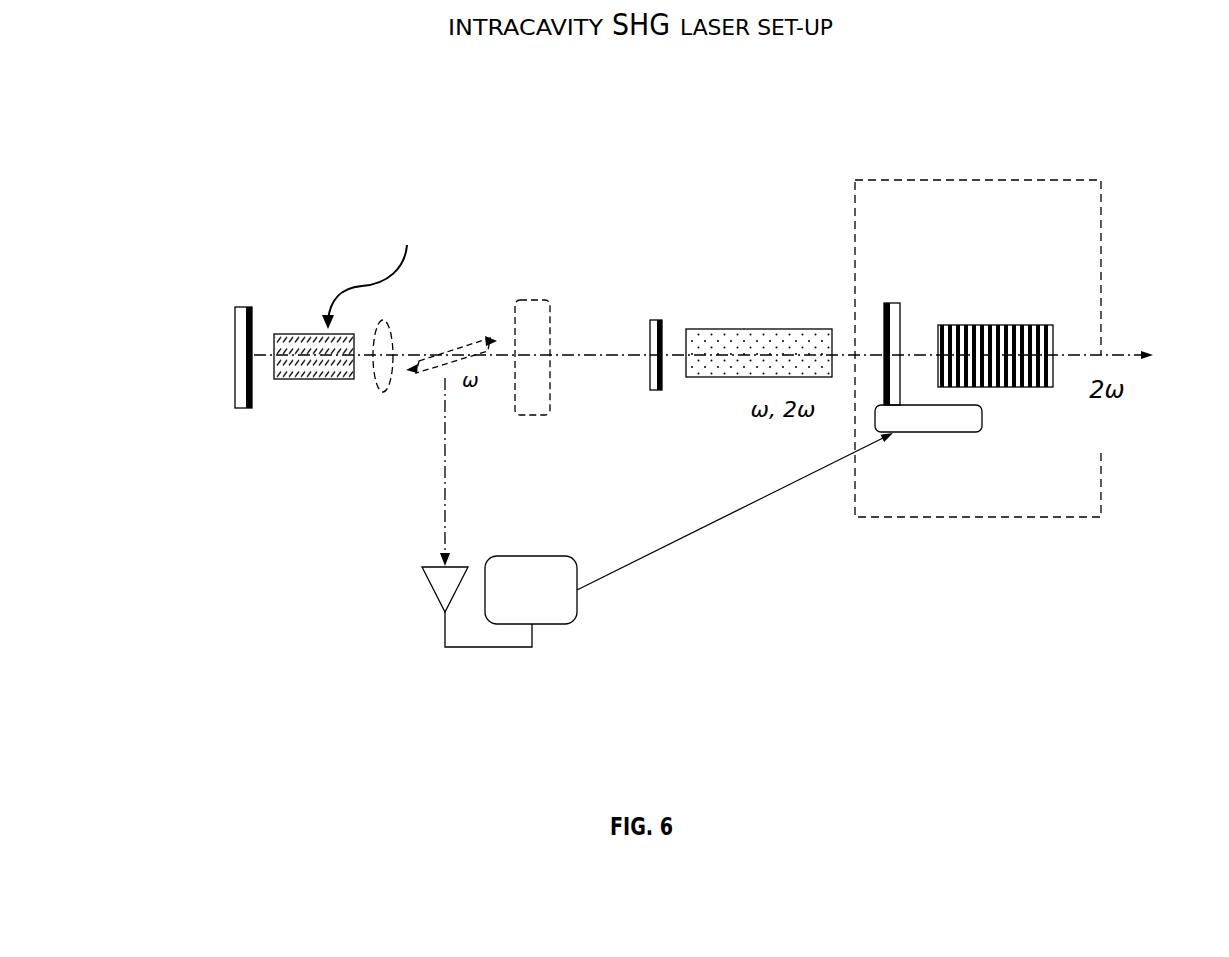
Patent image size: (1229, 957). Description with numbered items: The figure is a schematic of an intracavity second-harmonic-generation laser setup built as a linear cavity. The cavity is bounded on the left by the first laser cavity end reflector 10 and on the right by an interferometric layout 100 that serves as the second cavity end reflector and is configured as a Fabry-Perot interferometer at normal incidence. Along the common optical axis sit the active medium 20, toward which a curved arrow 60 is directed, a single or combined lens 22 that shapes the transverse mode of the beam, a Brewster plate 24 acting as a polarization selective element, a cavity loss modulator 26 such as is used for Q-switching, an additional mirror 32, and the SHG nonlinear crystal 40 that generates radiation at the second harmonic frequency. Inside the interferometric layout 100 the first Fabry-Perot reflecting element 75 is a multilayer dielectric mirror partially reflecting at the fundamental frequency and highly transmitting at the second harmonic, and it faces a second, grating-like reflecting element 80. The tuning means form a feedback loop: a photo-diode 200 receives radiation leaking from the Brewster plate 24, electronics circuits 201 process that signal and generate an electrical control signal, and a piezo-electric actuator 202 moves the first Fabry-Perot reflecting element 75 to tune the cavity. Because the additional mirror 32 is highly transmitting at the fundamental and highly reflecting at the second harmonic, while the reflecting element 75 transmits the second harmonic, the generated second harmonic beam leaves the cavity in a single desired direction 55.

The first laser cavity end reflector 10 is at (190, 344).
The active medium 20 is at (293, 405).
The lens 22 is at (445, 289).
The Brewster plate 24 is at (427, 451).
The cavity loss modulator 26 is at (501, 389).
The additional mirror 32 is at (618, 399).
The SHG nonlinear crystal 40 is at (759, 307).
The desired direction 55 is at (1162, 308).
The pump beam 60 is at (324, 259).
The first Fabry-Perot interferometer reflecting element 75 is at (833, 297).
The wavelength-selective grating element 80 is at (1008, 289).
The interferometric layout 100 is at (978, 348).
The photo-diode 200 is at (459, 607).
The electronics circuits 201 is at (689, 528).
The piezo-electric actuator 202 is at (966, 440).